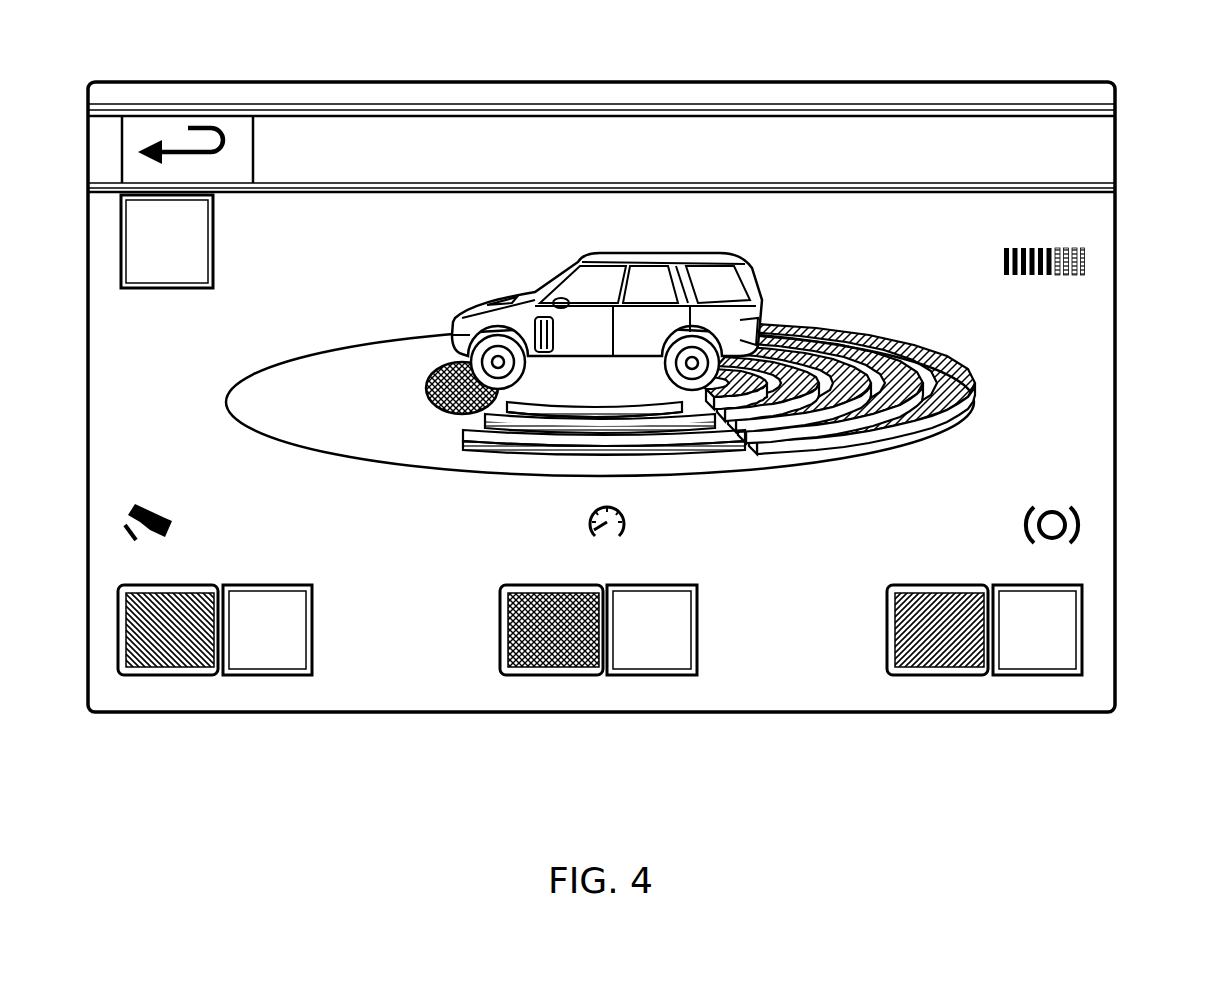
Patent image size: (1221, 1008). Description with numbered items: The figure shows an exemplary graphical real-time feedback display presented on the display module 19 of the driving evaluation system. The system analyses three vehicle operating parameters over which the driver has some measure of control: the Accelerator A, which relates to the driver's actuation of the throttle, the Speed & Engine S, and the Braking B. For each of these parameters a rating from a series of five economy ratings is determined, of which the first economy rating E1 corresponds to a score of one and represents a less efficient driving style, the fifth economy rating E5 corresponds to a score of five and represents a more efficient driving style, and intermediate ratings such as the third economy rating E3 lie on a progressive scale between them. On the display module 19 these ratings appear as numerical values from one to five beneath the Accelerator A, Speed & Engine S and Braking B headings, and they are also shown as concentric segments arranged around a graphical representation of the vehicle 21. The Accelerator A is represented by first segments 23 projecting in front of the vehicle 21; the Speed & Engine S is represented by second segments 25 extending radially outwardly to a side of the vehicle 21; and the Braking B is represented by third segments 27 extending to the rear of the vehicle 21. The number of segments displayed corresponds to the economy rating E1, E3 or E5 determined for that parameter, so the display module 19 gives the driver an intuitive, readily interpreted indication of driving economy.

The display module 19 is at (847, 112).
The vehicle 21 is at (651, 285).
The first segments 23 is at (460, 398).
The second segments 25 is at (668, 435).
The third segments 27 is at (972, 420).
The Accelerator A is at (209, 650).
The Speed & Engine S is at (605, 651).
The Braking B is at (986, 651).
The first economy rating E1 is at (176, 666).
The third economy rating E3 is at (580, 655).
The fifth economy rating E5 is at (956, 655).